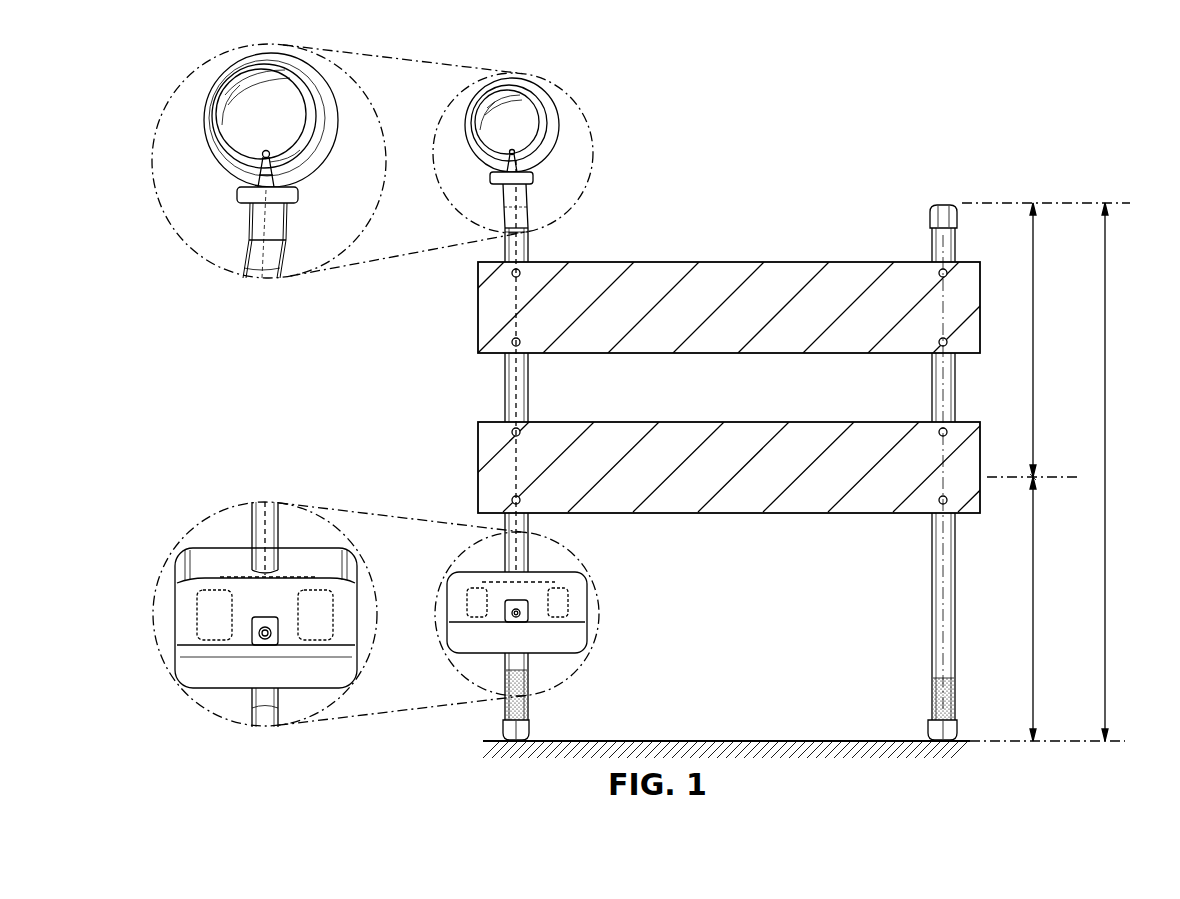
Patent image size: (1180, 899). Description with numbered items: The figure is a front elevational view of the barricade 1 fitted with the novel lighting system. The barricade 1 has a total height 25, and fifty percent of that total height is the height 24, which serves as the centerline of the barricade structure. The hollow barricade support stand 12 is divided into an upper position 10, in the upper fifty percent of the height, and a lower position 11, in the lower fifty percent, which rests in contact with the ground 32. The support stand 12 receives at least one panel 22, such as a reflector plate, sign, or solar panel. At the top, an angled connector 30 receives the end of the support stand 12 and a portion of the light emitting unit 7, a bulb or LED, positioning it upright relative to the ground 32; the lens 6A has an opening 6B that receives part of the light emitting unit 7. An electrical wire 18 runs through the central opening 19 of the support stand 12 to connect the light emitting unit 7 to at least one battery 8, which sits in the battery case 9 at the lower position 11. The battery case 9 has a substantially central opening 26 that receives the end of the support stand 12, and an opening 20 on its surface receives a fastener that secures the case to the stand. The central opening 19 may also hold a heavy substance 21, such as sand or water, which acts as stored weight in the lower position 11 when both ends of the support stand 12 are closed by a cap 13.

The barricade 1 is at (800, 162).
The lens 6A is at (334, 110).
The opening 6B is at (297, 193).
The light emitting unit 7 is at (242, 182).
The battery 8 is at (468, 607).
The battery case 9 is at (215, 556).
The upper position 10 is at (507, 368).
The lower position 11 is at (1034, 603).
The barricade support stand 12 is at (528, 384).
The cap 13 is at (931, 222).
The electrical wire 18 is at (533, 240).
The central opening 19 is at (290, 250).
The opening 20 is at (511, 616).
The heavy substance 21 is at (505, 713).
The panel 22 is at (852, 282).
The height 24 is at (1063, 477).
The total height 25 is at (1106, 470).
The central opening 26 is at (288, 563).
The angled connector 30 is at (250, 217).
The ground 32 is at (877, 741).